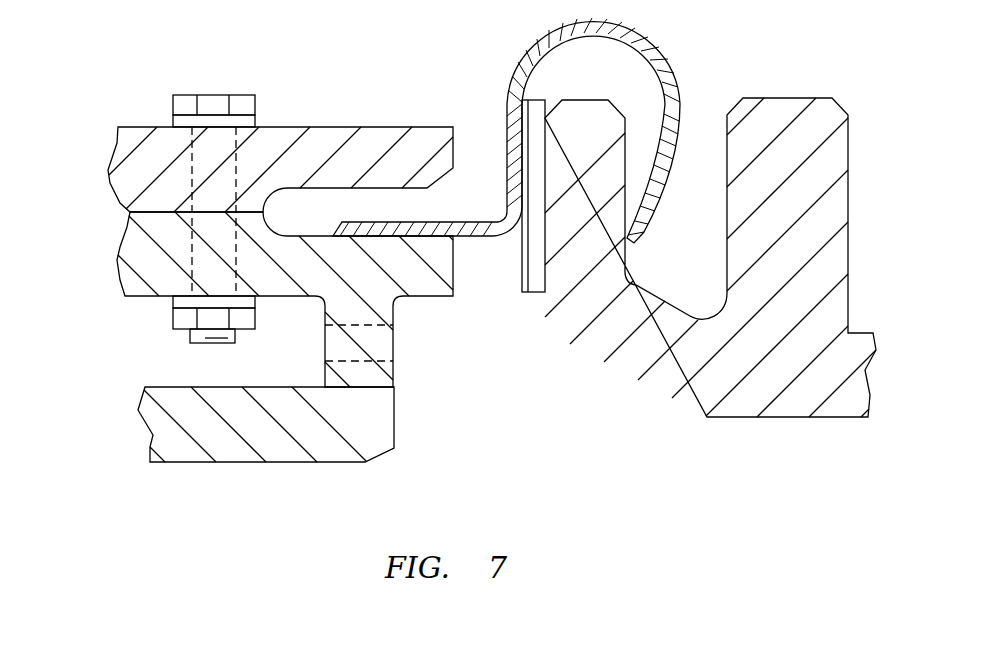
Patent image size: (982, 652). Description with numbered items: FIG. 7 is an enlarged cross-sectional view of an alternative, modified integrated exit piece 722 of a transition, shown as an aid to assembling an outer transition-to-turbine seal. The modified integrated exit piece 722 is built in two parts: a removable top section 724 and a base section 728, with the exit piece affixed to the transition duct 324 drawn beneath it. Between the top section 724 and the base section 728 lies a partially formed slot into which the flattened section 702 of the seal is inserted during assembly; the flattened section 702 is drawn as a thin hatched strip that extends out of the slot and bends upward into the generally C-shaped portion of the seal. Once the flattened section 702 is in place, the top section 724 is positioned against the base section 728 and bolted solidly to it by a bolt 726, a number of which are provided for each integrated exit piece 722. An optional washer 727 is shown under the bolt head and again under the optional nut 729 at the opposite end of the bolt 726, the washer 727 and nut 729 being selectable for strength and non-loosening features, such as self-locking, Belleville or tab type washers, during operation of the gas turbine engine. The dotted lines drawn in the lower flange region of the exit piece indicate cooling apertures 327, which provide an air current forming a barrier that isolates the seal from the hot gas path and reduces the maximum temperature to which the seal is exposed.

The flattened section 702 is at (382, 222).
The modified integrated exit piece 722 is at (274, 207).
The removable top section 724 is at (333, 137).
The bolt 726 is at (213, 95).
The washer 727 is at (170, 122).
The base section 728 is at (422, 284).
The nut 729 is at (187, 334).
The cooling apertures 327 is at (325, 350).
The transition duct 324 is at (247, 462).